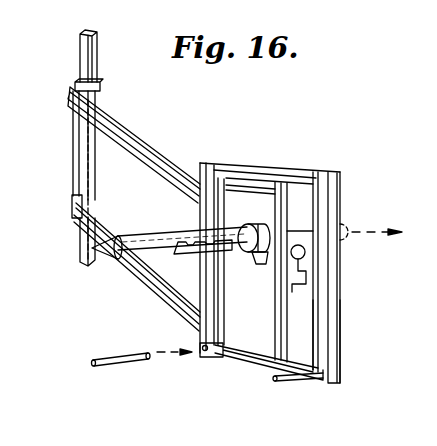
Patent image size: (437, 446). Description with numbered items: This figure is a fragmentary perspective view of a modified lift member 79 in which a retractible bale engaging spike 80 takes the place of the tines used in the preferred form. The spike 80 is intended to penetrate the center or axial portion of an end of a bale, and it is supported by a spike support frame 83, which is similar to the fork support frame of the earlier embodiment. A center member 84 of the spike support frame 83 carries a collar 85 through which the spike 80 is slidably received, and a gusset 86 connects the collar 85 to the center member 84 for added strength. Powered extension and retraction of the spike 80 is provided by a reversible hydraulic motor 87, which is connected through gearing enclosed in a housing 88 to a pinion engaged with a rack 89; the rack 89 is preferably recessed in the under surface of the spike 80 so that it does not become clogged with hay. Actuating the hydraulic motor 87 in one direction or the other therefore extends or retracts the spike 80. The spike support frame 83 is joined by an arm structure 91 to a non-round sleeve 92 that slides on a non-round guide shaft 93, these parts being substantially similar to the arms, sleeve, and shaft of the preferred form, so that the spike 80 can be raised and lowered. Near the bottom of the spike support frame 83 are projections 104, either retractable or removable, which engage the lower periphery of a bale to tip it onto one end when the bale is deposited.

The modified lift member 79 is at (348, 184).
The bale engaging spike 80 is at (122, 268).
The spike support frame 83 is at (338, 345).
The center member 84 is at (258, 187).
The collar 85 is at (263, 226).
The gusset 86 is at (256, 266).
The hydraulic motor 87 is at (307, 285).
The housing 88 is at (306, 253).
The rack 89 is at (187, 251).
The arm structure 91 is at (148, 150).
The non-round sleeve 92 is at (72, 145).
The non-round guide shaft 93 is at (80, 48).
The projections 104 is at (121, 363).